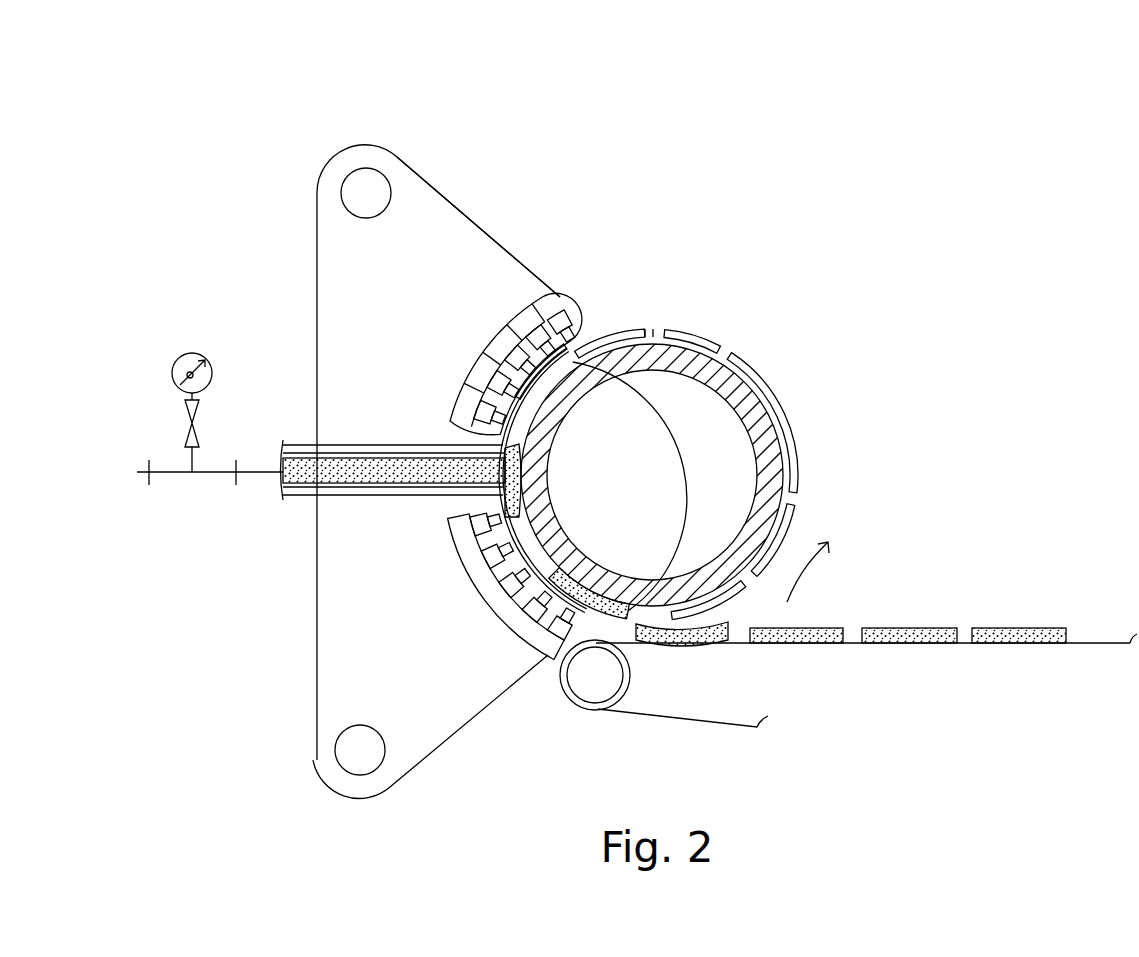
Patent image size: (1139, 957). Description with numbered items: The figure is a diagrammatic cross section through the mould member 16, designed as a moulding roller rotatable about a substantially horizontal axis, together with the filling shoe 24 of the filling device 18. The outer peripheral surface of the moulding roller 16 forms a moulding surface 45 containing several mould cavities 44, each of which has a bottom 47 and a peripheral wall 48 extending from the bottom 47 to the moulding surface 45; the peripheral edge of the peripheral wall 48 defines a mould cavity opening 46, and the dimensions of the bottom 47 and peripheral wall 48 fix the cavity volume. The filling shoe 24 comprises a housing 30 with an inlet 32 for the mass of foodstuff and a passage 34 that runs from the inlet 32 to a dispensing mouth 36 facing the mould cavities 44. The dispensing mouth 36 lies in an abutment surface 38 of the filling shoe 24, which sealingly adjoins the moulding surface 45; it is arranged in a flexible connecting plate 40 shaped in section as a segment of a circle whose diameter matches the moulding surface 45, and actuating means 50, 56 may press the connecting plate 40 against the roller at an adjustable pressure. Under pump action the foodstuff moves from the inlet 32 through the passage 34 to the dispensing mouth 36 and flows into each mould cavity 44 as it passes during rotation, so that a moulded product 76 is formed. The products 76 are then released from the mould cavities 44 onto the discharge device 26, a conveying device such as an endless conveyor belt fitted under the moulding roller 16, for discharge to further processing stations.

The mould member 16 is at (753, 341).
The filling device 18 is at (345, 118).
The filling shoe 24 is at (418, 200).
The discharge device 26 is at (960, 644).
The housing 30 is at (317, 247).
The inlet 32 is at (293, 487).
The passage 34 is at (413, 462).
The dispensing mouth 36 is at (480, 438).
The abutment surface 38 is at (556, 605).
The flexible connecting plate 40 is at (548, 655).
The mould cavity 44 is at (688, 335).
The moulding surface 45 is at (618, 330).
The mould cavity opening 46 is at (670, 325).
The bottom 47 is at (650, 337).
The peripheral wall 48 is at (720, 340).
The actuating means 50 is at (536, 322).
The actuating means 56 is at (495, 530).
The moulded product 76 is at (932, 628).